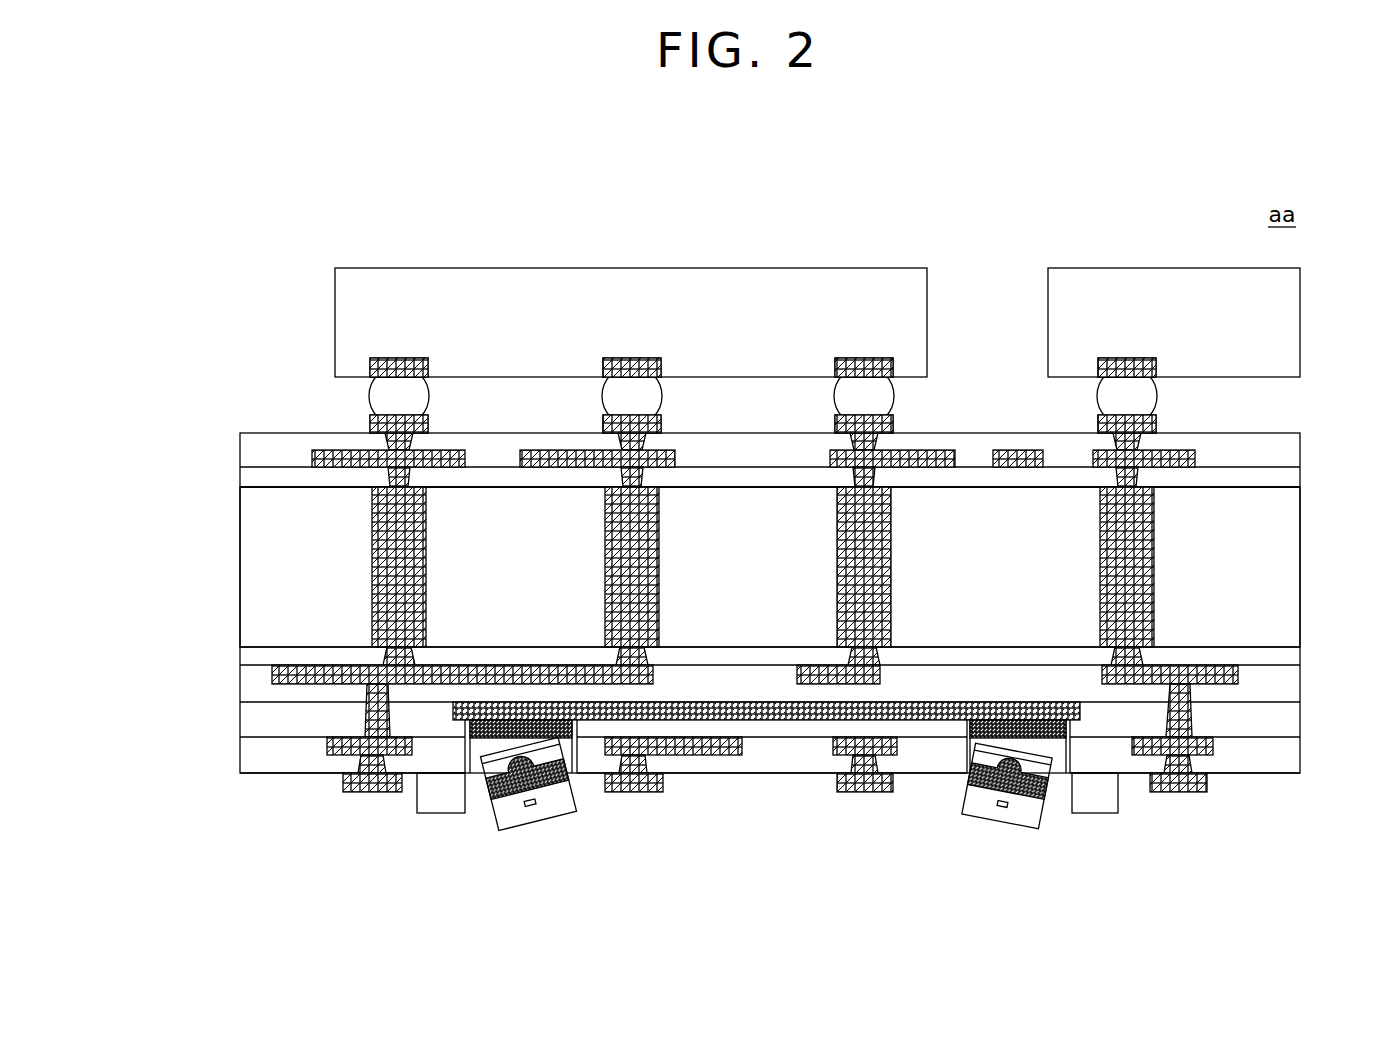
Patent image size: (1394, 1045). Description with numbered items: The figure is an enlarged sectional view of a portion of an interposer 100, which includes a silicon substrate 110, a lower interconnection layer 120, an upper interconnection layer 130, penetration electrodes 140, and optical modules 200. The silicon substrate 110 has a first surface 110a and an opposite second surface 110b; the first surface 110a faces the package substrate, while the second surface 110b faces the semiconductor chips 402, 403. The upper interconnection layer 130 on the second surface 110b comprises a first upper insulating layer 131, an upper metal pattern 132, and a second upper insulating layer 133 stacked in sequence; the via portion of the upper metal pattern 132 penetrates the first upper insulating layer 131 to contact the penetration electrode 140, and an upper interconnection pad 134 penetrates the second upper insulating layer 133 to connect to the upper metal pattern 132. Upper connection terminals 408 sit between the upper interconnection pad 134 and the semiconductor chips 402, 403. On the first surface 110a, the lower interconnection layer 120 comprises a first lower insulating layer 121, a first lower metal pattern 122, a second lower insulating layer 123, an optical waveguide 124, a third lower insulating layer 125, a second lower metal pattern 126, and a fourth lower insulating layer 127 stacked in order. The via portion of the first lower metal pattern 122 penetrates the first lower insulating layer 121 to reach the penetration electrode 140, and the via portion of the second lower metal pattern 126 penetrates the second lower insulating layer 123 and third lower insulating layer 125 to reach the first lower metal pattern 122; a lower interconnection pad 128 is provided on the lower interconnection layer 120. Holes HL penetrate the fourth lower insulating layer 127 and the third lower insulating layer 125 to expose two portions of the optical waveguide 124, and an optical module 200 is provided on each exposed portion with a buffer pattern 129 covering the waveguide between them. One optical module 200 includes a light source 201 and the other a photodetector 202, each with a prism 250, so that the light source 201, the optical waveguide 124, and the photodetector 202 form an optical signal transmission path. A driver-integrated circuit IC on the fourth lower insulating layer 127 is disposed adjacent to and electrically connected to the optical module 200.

The interposer 100 is at (1310, 432).
The silicon substrate 110 is at (253, 553).
The first surface 110a is at (770, 648).
The second surface 110b is at (752, 487).
The lower interconnection layer 120 is at (157, 622).
The first lower insulating layer 121 is at (250, 656).
The first lower metal pattern 122 is at (272, 677).
The second lower insulating layer 123 is at (253, 693).
The optical waveguide 124 is at (455, 714).
The third lower insulating layer 125 is at (253, 726).
The second lower metal pattern 126 is at (335, 745).
The fourth lower insulating layer 127 is at (253, 767).
The lower interconnection pad 128 is at (368, 786).
The buffer pattern 129 is at (565, 728).
The upper interconnection layer 130 is at (157, 425).
The first upper insulating layer 131 is at (253, 478).
The upper metal pattern 132 is at (318, 456).
The second upper insulating layer 133 is at (250, 445).
The upper interconnection pad 134 is at (378, 423).
The penetration electrode 140 is at (385, 578).
The optical module 200 is at (767, 845).
The light source 201 is at (525, 833).
The photodetector 202 is at (1012, 831).
The prism 250 is at (481, 762).
The semiconductor chip 402 is at (345, 318).
The semiconductor chip 403 is at (1060, 318).
The upper connection terminal 408 is at (385, 398).
The hole HL is at (470, 758).
The driver-integrated circuit IC is at (767, 793).